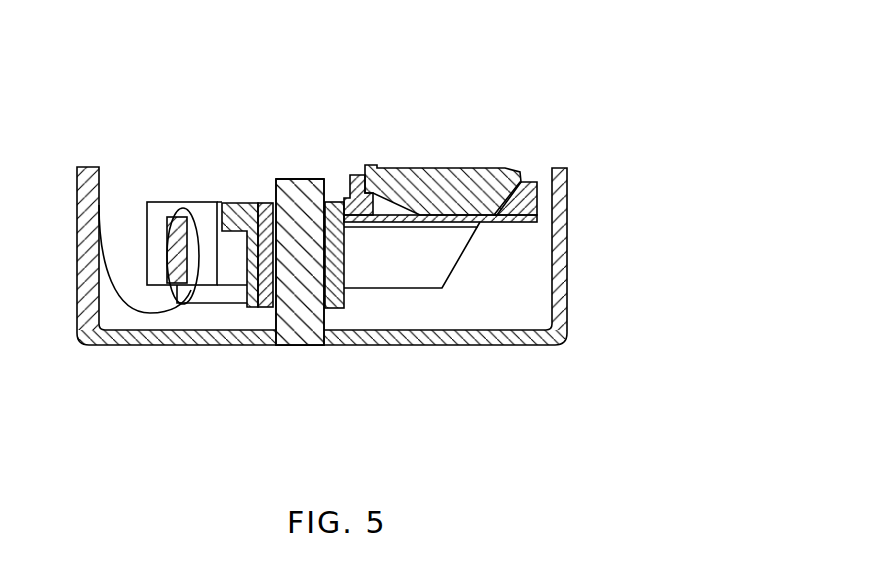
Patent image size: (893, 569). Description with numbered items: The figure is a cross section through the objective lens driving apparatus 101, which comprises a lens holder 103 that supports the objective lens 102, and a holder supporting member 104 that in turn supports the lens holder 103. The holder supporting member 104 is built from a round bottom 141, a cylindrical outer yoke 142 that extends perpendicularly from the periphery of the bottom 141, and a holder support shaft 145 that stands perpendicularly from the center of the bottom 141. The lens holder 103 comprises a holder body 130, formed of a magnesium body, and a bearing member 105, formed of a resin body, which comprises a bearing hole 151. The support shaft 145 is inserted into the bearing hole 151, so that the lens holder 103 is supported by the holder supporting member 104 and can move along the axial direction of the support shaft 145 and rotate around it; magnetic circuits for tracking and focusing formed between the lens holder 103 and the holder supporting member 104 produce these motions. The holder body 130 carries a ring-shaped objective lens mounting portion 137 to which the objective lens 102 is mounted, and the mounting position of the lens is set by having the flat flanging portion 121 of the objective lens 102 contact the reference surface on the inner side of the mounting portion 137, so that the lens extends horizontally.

The objective lens driving apparatus 101 is at (397, 232).
The objective lens 102 is at (423, 166).
The lens holder 103 is at (186, 180).
The holder supporting member 104 is at (563, 278).
The bearing member 105 is at (253, 203).
The flat flanging portion 121 is at (518, 166).
The holder body 130 is at (207, 207).
The objective lens mounting portion 137 is at (540, 203).
The round bottom 141 is at (452, 345).
The cylindrical outer yoke 142 is at (567, 218).
The holder support shaft 145 is at (288, 345).
The bearing hole 151 is at (282, 213).